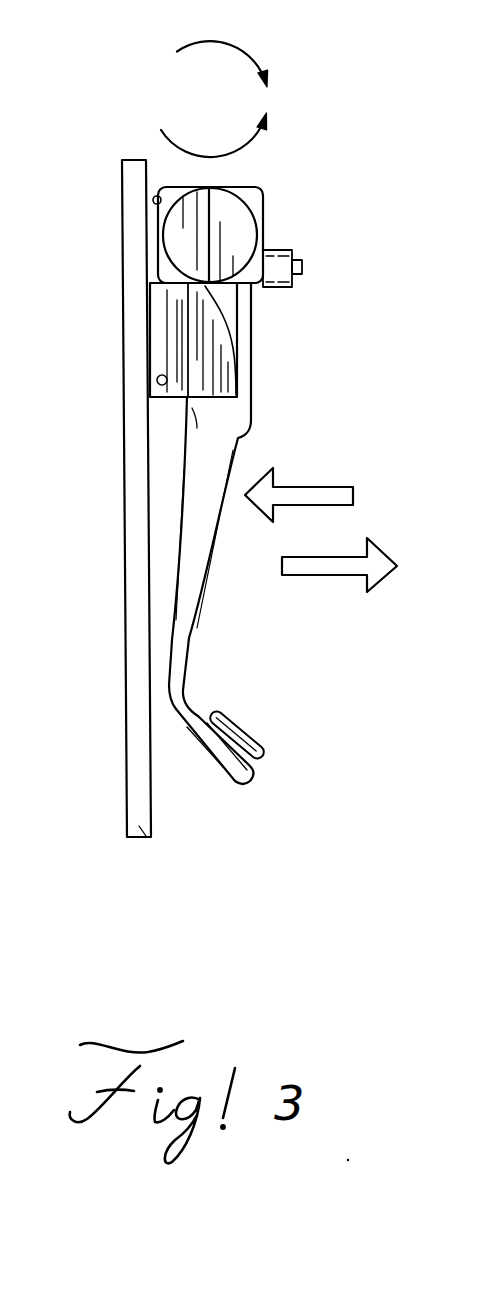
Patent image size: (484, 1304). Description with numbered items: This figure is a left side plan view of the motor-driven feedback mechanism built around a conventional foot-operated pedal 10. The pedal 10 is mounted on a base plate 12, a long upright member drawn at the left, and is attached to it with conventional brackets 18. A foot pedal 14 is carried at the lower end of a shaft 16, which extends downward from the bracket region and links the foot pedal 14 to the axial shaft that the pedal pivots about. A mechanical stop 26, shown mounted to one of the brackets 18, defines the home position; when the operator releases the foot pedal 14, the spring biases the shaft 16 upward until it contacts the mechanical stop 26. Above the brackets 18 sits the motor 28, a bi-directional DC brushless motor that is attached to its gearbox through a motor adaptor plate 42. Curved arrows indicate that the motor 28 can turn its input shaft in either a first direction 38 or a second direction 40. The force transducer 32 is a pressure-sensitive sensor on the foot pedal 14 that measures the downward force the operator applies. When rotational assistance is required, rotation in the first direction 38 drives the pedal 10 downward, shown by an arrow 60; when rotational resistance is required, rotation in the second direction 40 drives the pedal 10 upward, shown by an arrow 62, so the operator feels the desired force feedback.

The pedal 10 is at (223, 610).
The base plate 12 is at (140, 838).
The foot pedal 14 is at (252, 782).
The shaft 16 is at (235, 415).
The brackets 18 is at (158, 342).
The mechanical stop 26 is at (296, 270).
The motor 28 is at (248, 232).
The force transducer 32 is at (264, 754).
The first direction 38 is at (208, 65).
The second direction 40 is at (203, 126).
The motor adaptor plate 42 is at (253, 200).
The arrow 60 is at (324, 495).
The arrow 62 is at (312, 565).